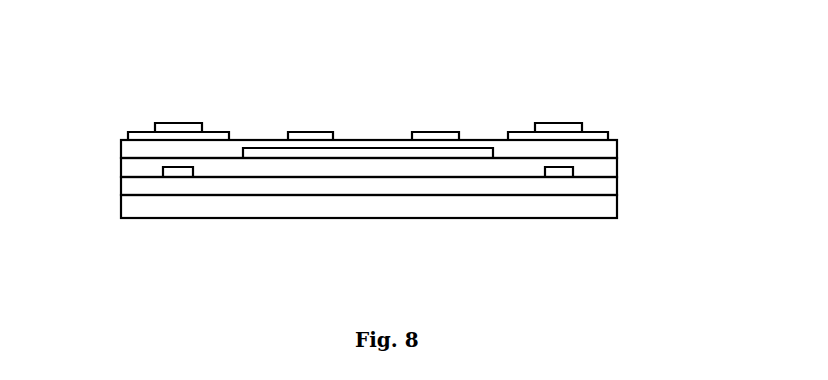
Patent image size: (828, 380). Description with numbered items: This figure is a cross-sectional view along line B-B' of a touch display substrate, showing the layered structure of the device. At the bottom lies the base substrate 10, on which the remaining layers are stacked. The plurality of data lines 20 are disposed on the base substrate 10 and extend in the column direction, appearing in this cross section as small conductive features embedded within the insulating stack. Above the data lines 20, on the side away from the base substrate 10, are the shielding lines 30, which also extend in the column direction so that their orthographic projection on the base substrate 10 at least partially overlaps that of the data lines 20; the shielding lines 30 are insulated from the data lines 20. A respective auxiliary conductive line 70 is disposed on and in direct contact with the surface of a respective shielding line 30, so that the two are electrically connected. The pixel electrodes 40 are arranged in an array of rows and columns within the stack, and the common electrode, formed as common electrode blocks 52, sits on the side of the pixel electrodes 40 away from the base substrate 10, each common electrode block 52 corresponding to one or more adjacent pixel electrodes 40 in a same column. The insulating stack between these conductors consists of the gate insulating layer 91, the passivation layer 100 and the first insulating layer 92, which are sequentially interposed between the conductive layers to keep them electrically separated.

The base substrate 10 is at (617, 212).
The data line 20 is at (180, 170).
The shielding line 30 is at (143, 135).
The pixel electrode 40 is at (357, 152).
The common electrode block 52 is at (317, 138).
The auxiliary conductive line 70 is at (175, 128).
The gate insulating layer 91 is at (617, 185).
The first insulating layer 92 is at (617, 148).
The passivation layer 100 is at (617, 162).